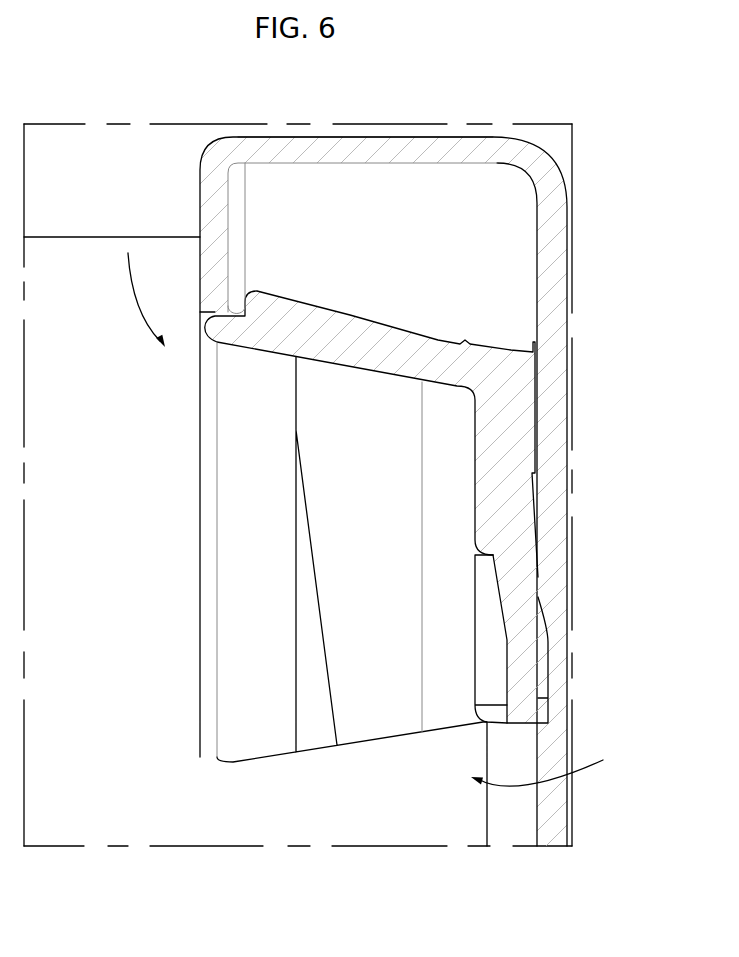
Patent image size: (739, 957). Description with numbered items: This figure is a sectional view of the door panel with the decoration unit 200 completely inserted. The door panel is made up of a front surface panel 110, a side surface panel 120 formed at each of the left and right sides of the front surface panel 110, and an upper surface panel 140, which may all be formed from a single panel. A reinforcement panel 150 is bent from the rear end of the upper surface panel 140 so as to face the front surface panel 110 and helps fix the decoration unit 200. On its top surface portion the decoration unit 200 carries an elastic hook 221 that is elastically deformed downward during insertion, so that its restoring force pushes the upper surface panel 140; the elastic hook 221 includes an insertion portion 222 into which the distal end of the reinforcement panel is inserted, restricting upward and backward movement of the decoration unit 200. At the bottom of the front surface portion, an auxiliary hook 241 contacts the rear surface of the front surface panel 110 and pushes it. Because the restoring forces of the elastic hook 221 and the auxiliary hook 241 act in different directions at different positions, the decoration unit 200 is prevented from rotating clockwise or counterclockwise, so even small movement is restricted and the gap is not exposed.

The front surface panel 110 is at (552, 310).
The side surface panel 120 is at (110, 812).
The upper surface panel 140 is at (300, 143).
The reinforcement panel 150 is at (200, 189).
The decoration unit 200 is at (265, 735).
The elastic hook 221 is at (372, 350).
The insertion portion 222 is at (240, 303).
The auxiliary hook 241 is at (523, 613).